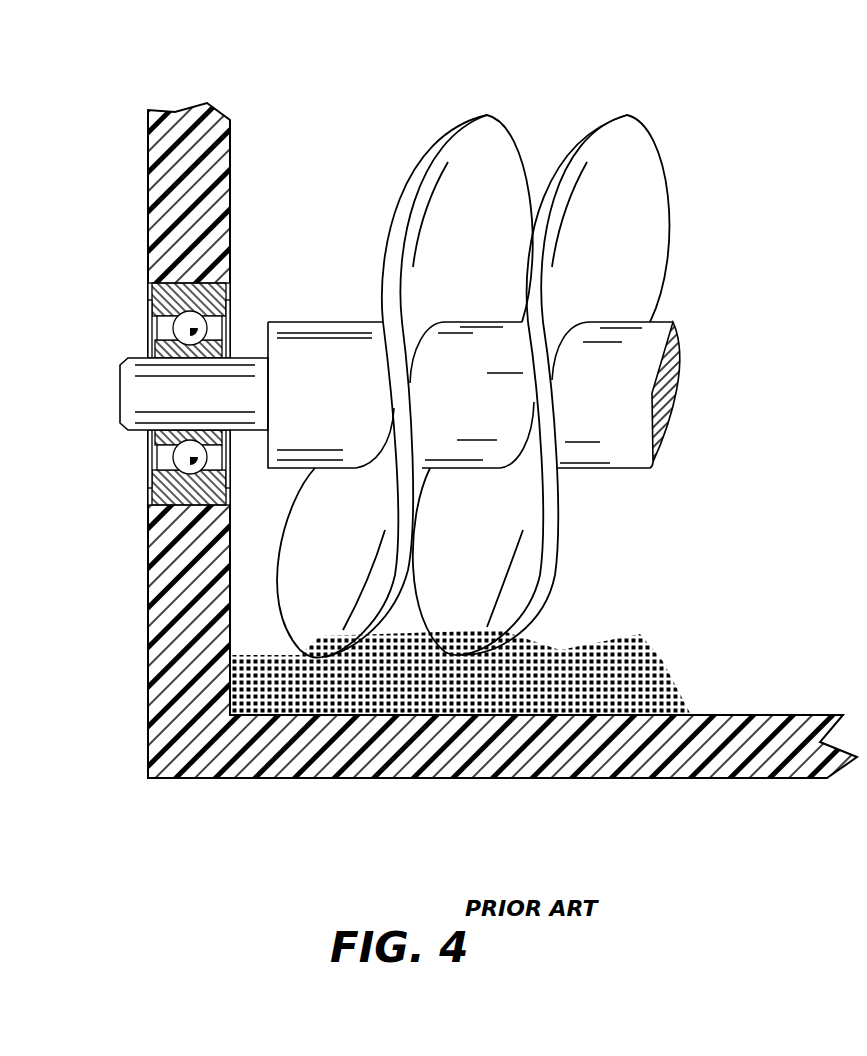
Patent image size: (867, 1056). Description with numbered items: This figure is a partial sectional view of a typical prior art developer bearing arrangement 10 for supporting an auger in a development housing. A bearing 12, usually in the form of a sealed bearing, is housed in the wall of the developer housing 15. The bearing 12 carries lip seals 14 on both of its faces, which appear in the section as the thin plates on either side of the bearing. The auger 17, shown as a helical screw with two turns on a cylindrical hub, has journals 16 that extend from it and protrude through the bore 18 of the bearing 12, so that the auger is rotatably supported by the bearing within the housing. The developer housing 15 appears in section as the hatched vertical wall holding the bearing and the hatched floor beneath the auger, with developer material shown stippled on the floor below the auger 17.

The developer bearing arrangement 10 is at (91, 84).
The bearing 12 is at (147, 285).
The lip seals 14 is at (148, 322).
The developer housing 15 is at (165, 567).
The journals 16 is at (240, 402).
The auger 17 is at (707, 127).
The bore 18 is at (125, 437).